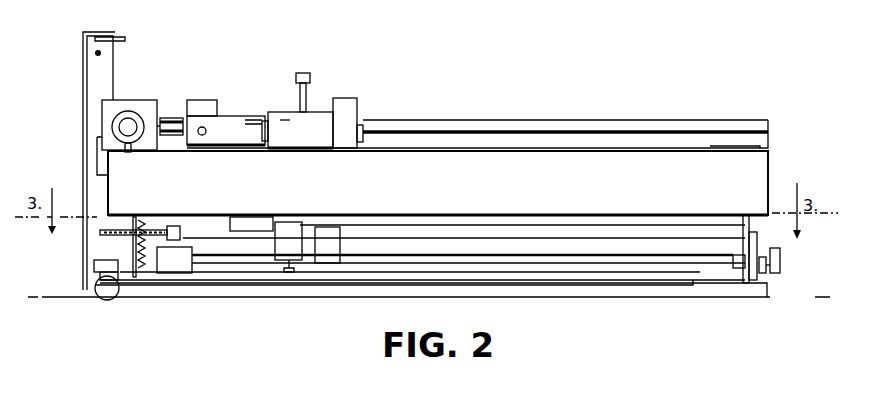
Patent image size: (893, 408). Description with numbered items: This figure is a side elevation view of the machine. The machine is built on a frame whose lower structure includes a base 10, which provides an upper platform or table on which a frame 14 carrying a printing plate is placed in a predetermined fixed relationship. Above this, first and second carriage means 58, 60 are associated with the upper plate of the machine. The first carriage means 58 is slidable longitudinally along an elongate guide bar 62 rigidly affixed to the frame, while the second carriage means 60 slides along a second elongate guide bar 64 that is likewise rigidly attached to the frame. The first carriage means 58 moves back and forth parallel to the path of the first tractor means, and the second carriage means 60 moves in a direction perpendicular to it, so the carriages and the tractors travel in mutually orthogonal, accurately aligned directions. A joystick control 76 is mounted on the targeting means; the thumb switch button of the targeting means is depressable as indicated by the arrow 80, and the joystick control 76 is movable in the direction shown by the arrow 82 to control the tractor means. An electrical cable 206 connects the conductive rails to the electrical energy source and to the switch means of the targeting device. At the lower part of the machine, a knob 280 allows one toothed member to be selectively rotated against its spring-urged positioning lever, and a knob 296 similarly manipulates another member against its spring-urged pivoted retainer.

The base 10 is at (672, 292).
The frame 14 is at (593, 284).
The first carriage means 58 is at (163, 97).
The second carriage means 60 is at (358, 92).
The elongate guide bar 62 is at (127, 121).
The elongate guide bar 64 is at (548, 118).
The joystick control 76 is at (298, 98).
The arrow 80 is at (302, 58).
The arrow 82 is at (338, 78).
The electrical cable 206 is at (117, 36).
The knob 280 is at (782, 260).
The knob 296 is at (108, 292).